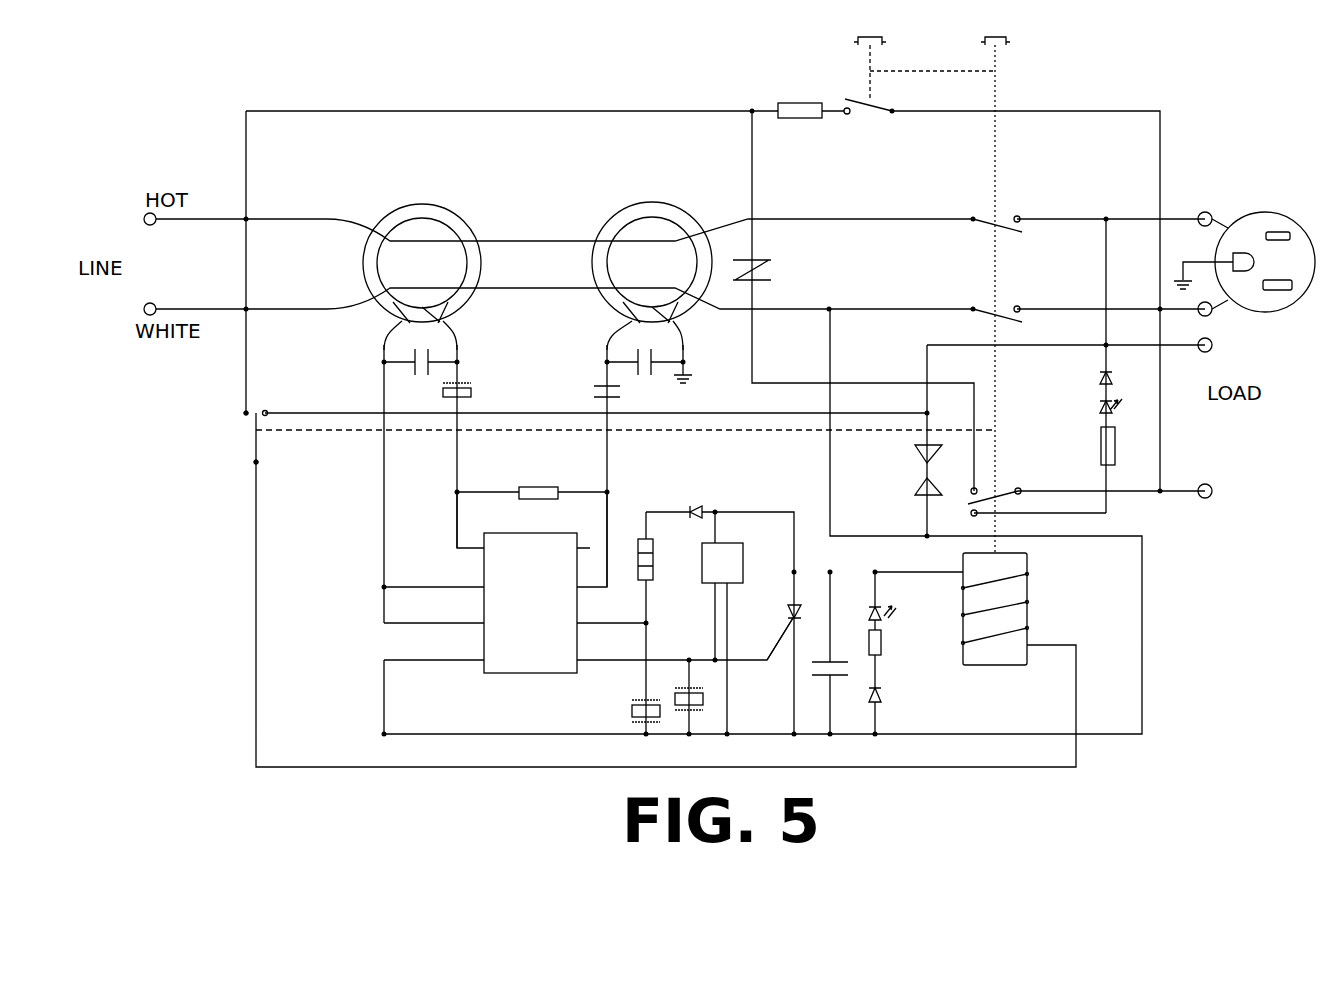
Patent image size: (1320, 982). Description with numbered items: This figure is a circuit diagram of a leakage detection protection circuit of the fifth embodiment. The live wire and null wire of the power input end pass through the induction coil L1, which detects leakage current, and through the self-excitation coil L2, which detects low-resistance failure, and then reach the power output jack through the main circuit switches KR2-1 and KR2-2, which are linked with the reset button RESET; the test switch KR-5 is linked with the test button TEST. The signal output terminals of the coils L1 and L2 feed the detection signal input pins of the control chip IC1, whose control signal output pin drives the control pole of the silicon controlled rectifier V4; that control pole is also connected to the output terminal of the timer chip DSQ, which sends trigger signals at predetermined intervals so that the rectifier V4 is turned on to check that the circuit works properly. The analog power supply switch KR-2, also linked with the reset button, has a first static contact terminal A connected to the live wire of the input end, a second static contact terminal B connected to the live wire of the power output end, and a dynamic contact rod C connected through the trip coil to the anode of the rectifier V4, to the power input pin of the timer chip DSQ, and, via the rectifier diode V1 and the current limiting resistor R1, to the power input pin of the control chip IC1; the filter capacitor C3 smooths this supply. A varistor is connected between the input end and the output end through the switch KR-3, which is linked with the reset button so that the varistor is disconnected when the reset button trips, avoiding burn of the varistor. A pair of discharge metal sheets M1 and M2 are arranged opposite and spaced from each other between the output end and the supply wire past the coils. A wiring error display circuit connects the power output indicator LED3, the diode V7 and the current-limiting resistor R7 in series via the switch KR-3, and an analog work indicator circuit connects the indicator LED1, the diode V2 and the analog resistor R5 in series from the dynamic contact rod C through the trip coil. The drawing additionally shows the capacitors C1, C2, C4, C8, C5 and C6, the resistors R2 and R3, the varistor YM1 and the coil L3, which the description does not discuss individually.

The first static contact terminal A is at (240, 408).
The second static contact terminal B is at (271, 404).
The dynamic contact rod C is at (250, 462).
The analog power supply switch KR-2 is at (625, 439).
The test button TEST is at (921, 58).
The reset button RESET is at (983, 284).
The induction coil L1 is at (422, 265).
The self-excitation coil L2 is at (652, 265).
The capacitor C1 is at (420, 355).
The capacitor C2 is at (645, 353).
The capacitor C4 is at (469, 387).
The capacitor C8 is at (620, 394).
The resistor R2 is at (532, 486).
The resistor R3 is at (798, 100).
The test switch KR-5 is at (875, 100).
The main circuit switch KR2-1 is at (971, 216).
The main circuit switch KR2-2 is at (971, 306).
The metal oxide varistor YM1 MOV YM1 is at (773, 269).
The diode V7 is at (1114, 376).
The power output indicator LED3 is at (1123, 417).
The current-limiting resistor R7 is at (1116, 446).
The switch KR-3 is at (1005, 488).
The discharge metal sheet M1 is at (920, 457).
The discharge metal sheet M2 is at (920, 498).
The control chip IC1 is at (588, 582).
The current limiting resistor R1 is at (657, 623).
The rectifier diode V1 is at (720, 612).
The timer chip DSQ is at (723, 623).
The SCR V4 is at (774, 631).
The filter capacitor C3 is at (631, 711).
The capacitor C5 is at (693, 697).
The capacitor C6 is at (826, 653).
The indicator LED1 is at (867, 601).
The analog resistor R5 is at (864, 659).
The diode V2 is at (864, 711).
The solenoid coil L3 (SOL) L3 is at (952, 622).